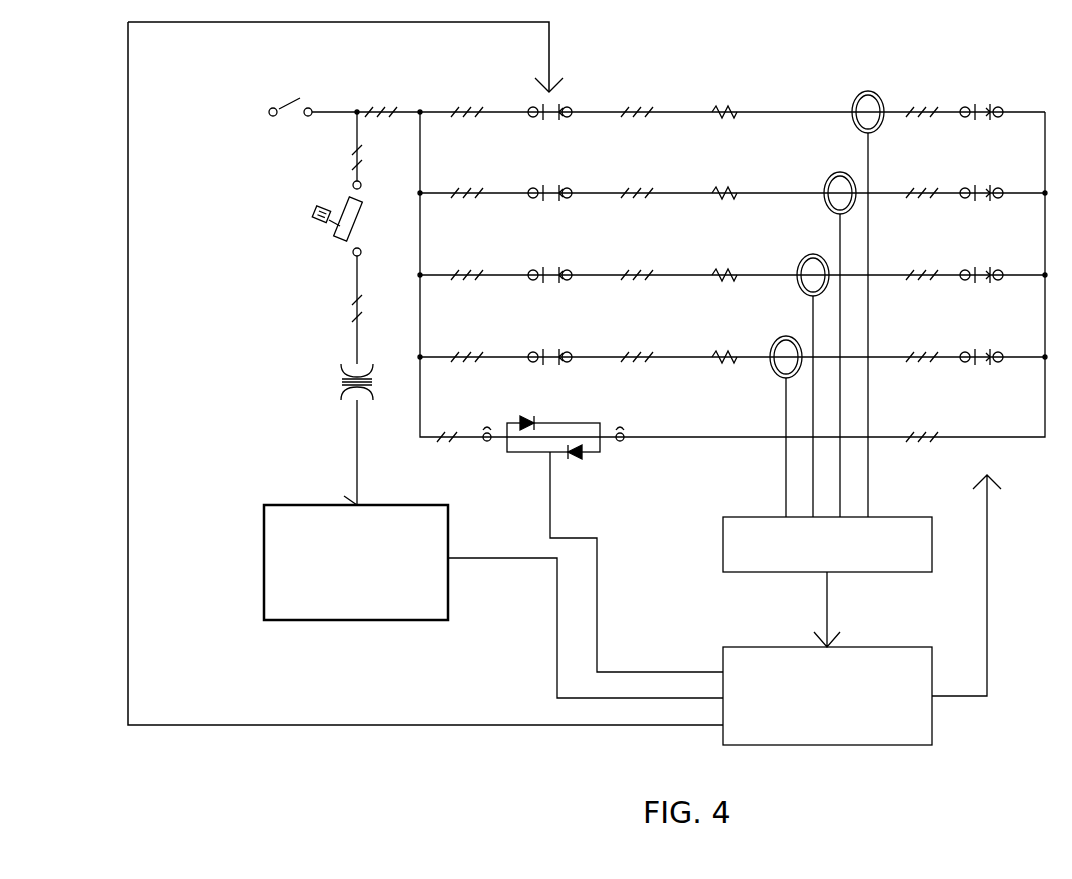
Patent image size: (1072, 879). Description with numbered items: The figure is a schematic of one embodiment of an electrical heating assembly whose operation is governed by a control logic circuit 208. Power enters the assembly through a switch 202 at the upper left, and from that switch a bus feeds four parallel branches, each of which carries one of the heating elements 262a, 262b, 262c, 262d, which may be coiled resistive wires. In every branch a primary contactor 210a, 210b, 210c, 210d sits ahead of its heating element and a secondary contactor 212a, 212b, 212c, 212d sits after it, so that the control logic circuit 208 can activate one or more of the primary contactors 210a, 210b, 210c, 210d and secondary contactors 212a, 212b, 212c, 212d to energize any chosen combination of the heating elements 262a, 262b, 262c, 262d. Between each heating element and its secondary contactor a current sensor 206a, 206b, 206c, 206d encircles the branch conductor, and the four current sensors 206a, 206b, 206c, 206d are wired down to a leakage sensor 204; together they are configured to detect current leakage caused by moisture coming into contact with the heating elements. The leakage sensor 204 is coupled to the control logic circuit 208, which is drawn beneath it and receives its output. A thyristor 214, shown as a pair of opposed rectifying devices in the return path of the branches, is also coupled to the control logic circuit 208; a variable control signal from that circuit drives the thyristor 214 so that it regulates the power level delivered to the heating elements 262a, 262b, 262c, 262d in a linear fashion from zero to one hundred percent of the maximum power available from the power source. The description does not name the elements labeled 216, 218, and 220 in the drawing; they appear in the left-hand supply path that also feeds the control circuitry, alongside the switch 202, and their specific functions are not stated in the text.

The switch 202 is at (270, 106).
The circuit breaker 220 is at (340, 198).
The transformer 218 is at (338, 360).
The low voltage control circuit 216 is at (320, 500).
The thyristor 214 is at (550, 423).
The leakage sensor 204 is at (722, 530).
The control logic circuit 208 is at (722, 645).
The primary contactor 210a is at (533, 104).
The primary contactor 210b is at (534, 185).
The primary contactor 210c is at (534, 267).
The primary contactor 210d is at (534, 348).
The heating element 262a is at (718, 100).
The heating element 262b is at (718, 181).
The heating element 262c is at (718, 263).
The heating element 262d is at (718, 345).
The current sensor 206a is at (858, 92).
The current sensor 206b is at (830, 173).
The current sensor 206c is at (812, 255).
The current sensor 206d is at (784, 337).
The secondary contactor 212a is at (996, 102).
The secondary contactor 212b is at (996, 184).
The secondary contactor 212c is at (996, 266).
The secondary contactor 212d is at (996, 348).